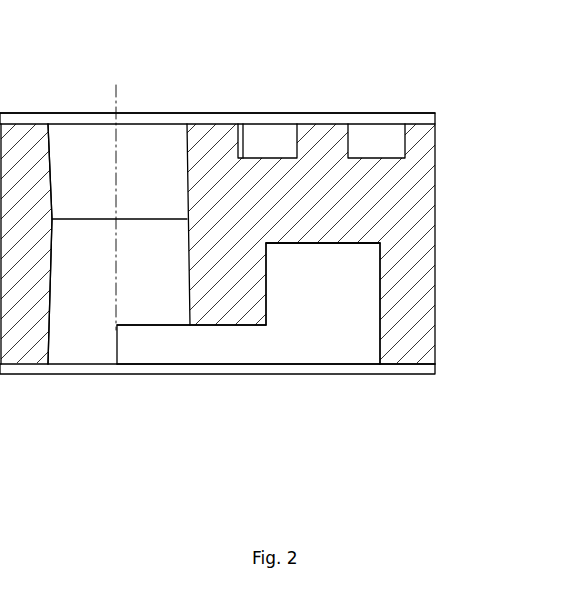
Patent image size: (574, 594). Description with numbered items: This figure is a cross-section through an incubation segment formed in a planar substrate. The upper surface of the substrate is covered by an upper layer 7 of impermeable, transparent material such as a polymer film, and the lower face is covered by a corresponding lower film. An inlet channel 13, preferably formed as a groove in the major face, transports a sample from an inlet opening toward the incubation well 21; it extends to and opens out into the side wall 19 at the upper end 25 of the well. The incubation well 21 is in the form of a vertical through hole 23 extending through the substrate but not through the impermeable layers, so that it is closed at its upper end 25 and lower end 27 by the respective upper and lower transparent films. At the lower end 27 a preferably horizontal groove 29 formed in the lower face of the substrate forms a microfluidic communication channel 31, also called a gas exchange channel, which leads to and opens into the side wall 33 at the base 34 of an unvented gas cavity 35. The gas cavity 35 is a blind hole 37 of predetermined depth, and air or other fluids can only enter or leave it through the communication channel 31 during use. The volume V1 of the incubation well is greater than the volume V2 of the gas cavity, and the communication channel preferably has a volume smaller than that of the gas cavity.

The upper layer 7 is at (418, 112).
The inlet channel 13 is at (368, 138).
The side wall 19 is at (93, 143).
The incubation well 21 is at (141, 138).
The vertical through hole 23 is at (68, 352).
The upper end 25 is at (73, 118).
The lower end 27 is at (116, 330).
The groove 29 is at (226, 353).
The microfluidic communication channel 31 is at (251, 352).
The side wall 33 is at (318, 344).
The base 34 is at (350, 353).
The unvented gas cavity 35 is at (303, 305).
The blind hole 37 is at (338, 260).
The first volume V1 is at (167, 145).
The second volume V2 is at (358, 308).